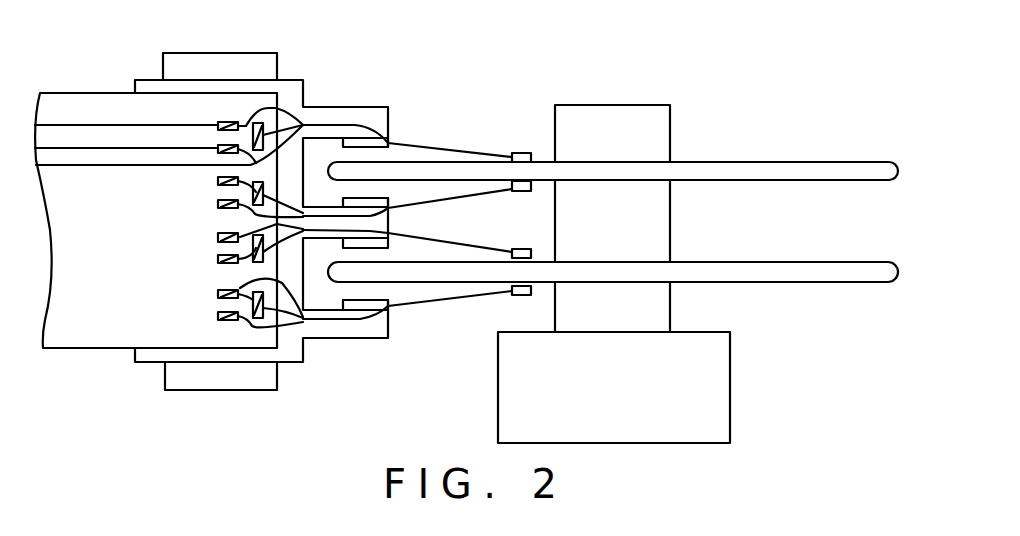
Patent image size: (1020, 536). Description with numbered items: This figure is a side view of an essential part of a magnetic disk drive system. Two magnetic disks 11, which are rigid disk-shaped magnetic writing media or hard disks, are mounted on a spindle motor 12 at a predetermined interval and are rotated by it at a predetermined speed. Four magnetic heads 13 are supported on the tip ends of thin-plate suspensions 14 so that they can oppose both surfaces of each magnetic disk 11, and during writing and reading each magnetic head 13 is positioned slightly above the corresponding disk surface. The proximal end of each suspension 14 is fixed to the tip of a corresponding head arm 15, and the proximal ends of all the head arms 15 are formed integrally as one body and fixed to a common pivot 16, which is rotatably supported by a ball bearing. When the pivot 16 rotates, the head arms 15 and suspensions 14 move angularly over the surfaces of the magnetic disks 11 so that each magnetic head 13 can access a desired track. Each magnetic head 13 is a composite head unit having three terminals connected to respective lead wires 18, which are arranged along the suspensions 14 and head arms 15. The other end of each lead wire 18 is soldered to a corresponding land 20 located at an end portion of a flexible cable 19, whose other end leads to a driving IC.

The magnetic disk 11 is at (748, 161).
The spindle motor 12 is at (730, 383).
The magnetic head 13 is at (517, 152).
The suspension 14 is at (426, 302).
The head arm 15 is at (363, 107).
The pivot 16 is at (277, 53).
The lead wire 18 is at (301, 342).
The flexible cable 19 is at (80, 352).
The land 20 is at (218, 318).